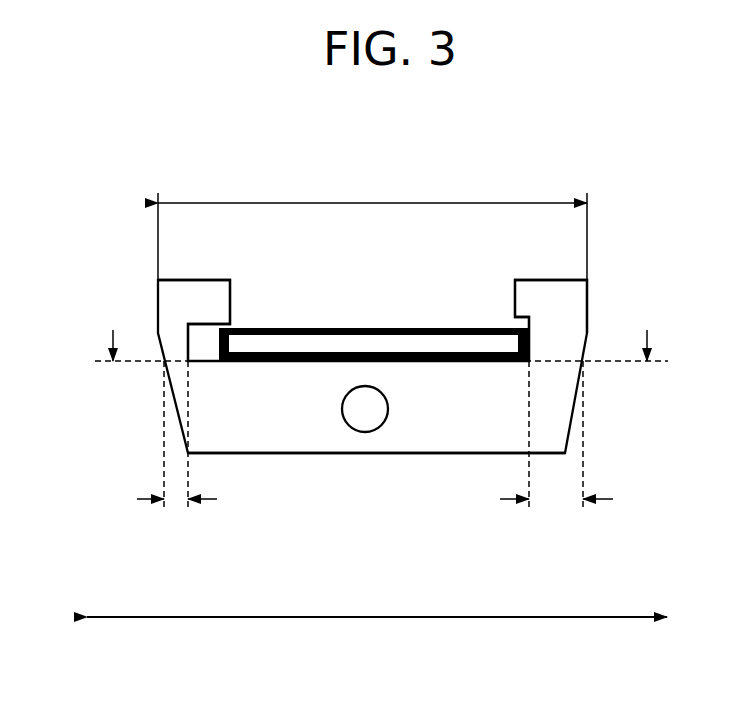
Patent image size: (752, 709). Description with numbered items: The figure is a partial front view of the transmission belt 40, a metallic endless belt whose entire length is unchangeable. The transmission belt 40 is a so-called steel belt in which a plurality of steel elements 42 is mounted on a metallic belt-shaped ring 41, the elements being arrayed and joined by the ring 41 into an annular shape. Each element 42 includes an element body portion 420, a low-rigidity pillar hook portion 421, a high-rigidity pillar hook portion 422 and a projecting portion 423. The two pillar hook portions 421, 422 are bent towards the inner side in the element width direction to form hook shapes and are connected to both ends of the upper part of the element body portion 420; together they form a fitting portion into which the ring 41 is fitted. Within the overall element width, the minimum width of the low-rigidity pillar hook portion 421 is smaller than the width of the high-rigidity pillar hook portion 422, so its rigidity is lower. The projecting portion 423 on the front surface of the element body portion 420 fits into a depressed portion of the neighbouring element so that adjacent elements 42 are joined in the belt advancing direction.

The transmission belt 40 is at (606, 257).
The ring 41 is at (360, 325).
The element 42 is at (330, 455).
The element body portion 420 is at (267, 432).
The low-rigidity pillar hook portion 421 is at (173, 333).
The high-rigidity pillar hook portion 422 is at (562, 337).
The projecting portion 423 is at (365, 417).